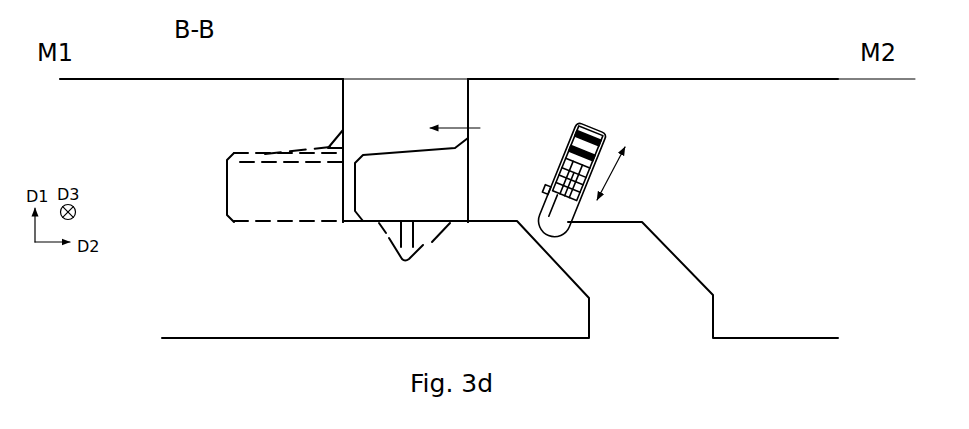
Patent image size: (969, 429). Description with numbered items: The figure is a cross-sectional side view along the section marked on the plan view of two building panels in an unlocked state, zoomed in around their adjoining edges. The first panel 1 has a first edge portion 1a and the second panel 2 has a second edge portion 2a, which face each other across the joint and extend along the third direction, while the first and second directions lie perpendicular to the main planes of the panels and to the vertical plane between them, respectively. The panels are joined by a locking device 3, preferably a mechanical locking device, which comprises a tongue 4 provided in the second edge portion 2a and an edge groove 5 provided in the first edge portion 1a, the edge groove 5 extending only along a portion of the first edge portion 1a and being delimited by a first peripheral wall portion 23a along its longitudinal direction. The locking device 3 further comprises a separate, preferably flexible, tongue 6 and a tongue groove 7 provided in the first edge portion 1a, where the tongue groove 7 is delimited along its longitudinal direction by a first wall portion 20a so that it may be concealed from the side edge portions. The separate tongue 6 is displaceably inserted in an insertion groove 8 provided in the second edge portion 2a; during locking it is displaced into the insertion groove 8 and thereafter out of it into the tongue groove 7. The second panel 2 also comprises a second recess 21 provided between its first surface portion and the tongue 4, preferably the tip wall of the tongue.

The first panel 1 is at (281, 62).
The first edge portion 1a is at (351, 60).
The second panel 2 is at (634, 57).
The second edge portion 2a is at (470, 57).
The locking device 3 is at (414, 50).
The second recess 21 is at (443, 108).
The tongue 4 is at (395, 142).
The edge groove 5 is at (252, 163).
The first peripheral wall portion 23a is at (240, 190).
The tongue groove 7 is at (400, 258).
The first wall portion 20a is at (425, 242).
The insertion groove 8 is at (591, 126).
The separate tongue 6 is at (611, 139).